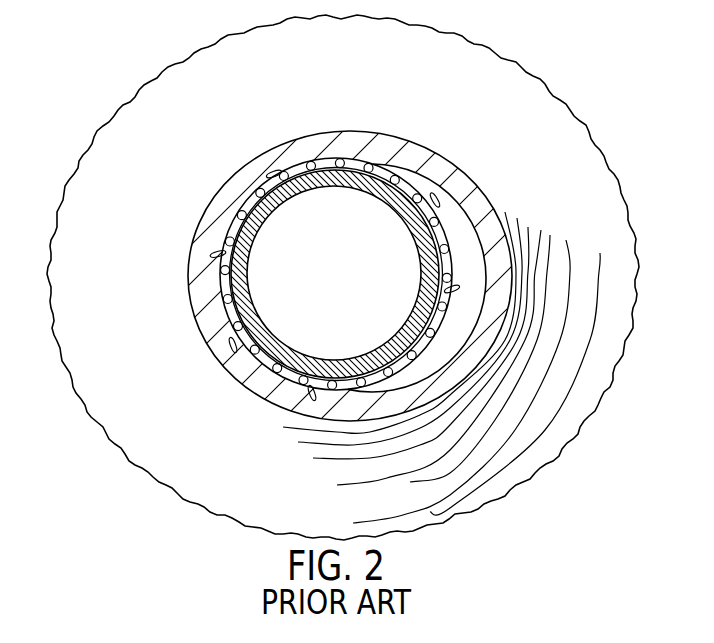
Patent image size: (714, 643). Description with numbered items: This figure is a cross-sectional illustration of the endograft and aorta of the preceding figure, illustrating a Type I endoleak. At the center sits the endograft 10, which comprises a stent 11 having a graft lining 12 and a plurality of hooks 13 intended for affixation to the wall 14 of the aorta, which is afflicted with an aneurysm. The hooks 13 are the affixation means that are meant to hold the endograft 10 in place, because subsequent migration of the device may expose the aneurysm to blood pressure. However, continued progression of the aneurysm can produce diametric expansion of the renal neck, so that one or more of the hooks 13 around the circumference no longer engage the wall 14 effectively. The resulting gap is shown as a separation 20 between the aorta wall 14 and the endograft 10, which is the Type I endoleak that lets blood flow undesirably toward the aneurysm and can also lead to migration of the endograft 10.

The endograft 10 is at (335, 246).
The stent 11 is at (291, 168).
The graft lining 12 is at (288, 192).
The hooks 13 is at (357, 156).
The wall 14 is at (191, 298).
The separation 20 is at (457, 220).